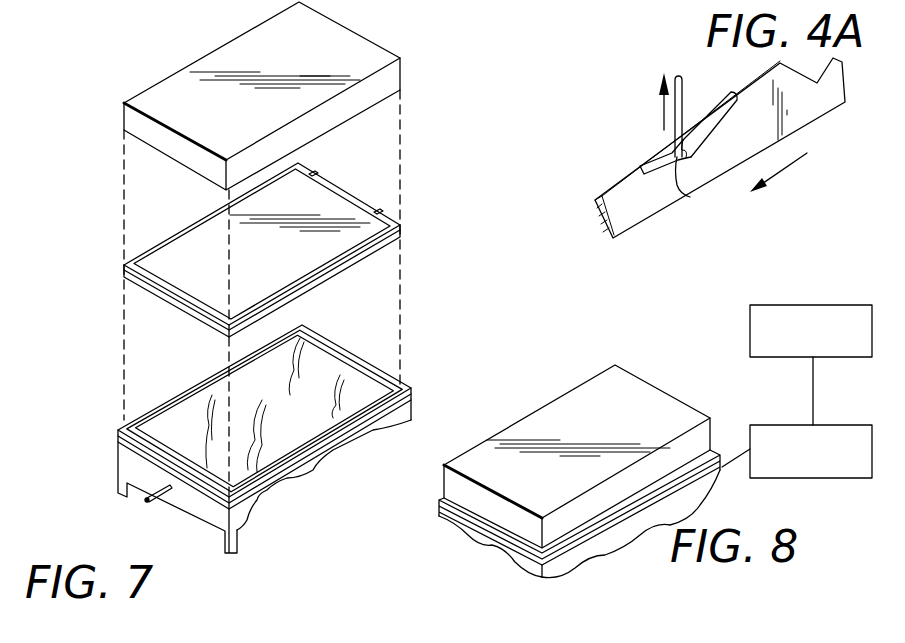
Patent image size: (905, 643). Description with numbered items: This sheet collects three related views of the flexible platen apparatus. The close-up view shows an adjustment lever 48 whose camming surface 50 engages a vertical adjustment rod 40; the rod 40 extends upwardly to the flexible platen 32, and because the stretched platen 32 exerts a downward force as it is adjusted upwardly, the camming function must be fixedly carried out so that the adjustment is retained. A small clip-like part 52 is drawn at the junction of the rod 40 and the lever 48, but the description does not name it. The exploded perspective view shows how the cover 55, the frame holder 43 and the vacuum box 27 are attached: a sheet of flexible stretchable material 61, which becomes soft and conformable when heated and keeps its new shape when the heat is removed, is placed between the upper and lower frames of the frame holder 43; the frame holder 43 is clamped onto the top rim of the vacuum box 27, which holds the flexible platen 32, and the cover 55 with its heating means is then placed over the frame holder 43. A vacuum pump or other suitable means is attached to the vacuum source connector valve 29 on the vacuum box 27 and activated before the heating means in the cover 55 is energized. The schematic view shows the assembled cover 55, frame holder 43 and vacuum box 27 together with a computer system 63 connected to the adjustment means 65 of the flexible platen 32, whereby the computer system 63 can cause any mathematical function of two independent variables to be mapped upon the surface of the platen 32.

In FIG. 7, the vacuum box 27 is at (100, 460).
In FIG. 8, the vacuum box 27 is at (498, 582).
In FIG. 7, the vacuum source connector valve 29 is at (147, 503).
In FIG. 7, the flexible platen 32 is at (327, 362).
In FIG. 4A, the vertical adjustment rod 40 is at (695, 80).
In FIG. 7, the frame holder 43 is at (108, 293).
In FIG. 8, the frame holder 43 is at (430, 486).
In FIG. 4A, the adjustment lever 48 is at (818, 112).
In FIG. 4A, the camming surface 50 is at (700, 190).
In FIG. 4A, the clip 52 is at (662, 160).
In FIG. 7, the cover 55 is at (92, 131).
In FIG. 8, the cover 55 is at (576, 392).
In FIG. 7, the sheet of flexible stretchable material 61 is at (183, 251).
In FIG. 8, the computer system 63 is at (787, 312).
In FIG. 8, the adjustment means 65 is at (763, 432).